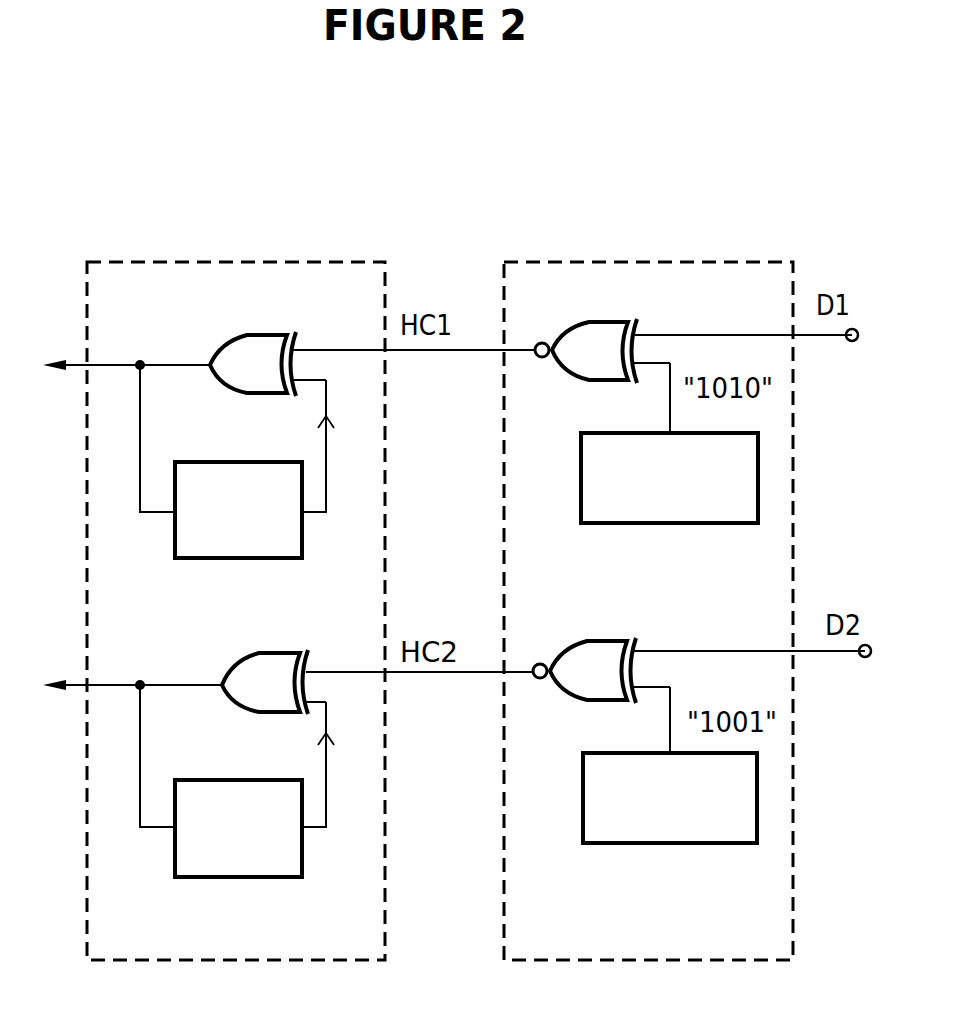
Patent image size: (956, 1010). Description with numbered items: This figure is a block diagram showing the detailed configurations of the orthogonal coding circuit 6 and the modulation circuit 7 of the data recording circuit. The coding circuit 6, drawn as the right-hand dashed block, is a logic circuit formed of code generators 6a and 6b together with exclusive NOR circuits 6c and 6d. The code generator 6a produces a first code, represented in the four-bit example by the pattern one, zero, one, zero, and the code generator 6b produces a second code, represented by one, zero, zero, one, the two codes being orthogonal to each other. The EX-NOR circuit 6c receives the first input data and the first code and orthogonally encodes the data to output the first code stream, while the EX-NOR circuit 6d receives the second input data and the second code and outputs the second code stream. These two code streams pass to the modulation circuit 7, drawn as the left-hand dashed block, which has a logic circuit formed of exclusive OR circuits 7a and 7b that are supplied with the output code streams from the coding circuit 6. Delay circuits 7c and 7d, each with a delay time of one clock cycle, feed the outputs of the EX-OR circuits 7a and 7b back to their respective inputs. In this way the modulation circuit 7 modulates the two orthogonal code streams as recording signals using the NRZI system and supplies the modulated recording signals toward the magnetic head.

The modulation circuit 7 is at (207, 262).
The orthogonal coding circuit 6 is at (597, 262).
The exclusive OR circuit 7a is at (245, 336).
The exclusive OR circuit 7b is at (257, 653).
The delay circuit 7c is at (200, 462).
The delay circuit 7d is at (207, 780).
The code generator 6a is at (722, 523).
The code generator 6b is at (670, 843).
The exclusive NOR circuit 6c is at (572, 328).
The exclusive NOR circuit 6d is at (584, 641).